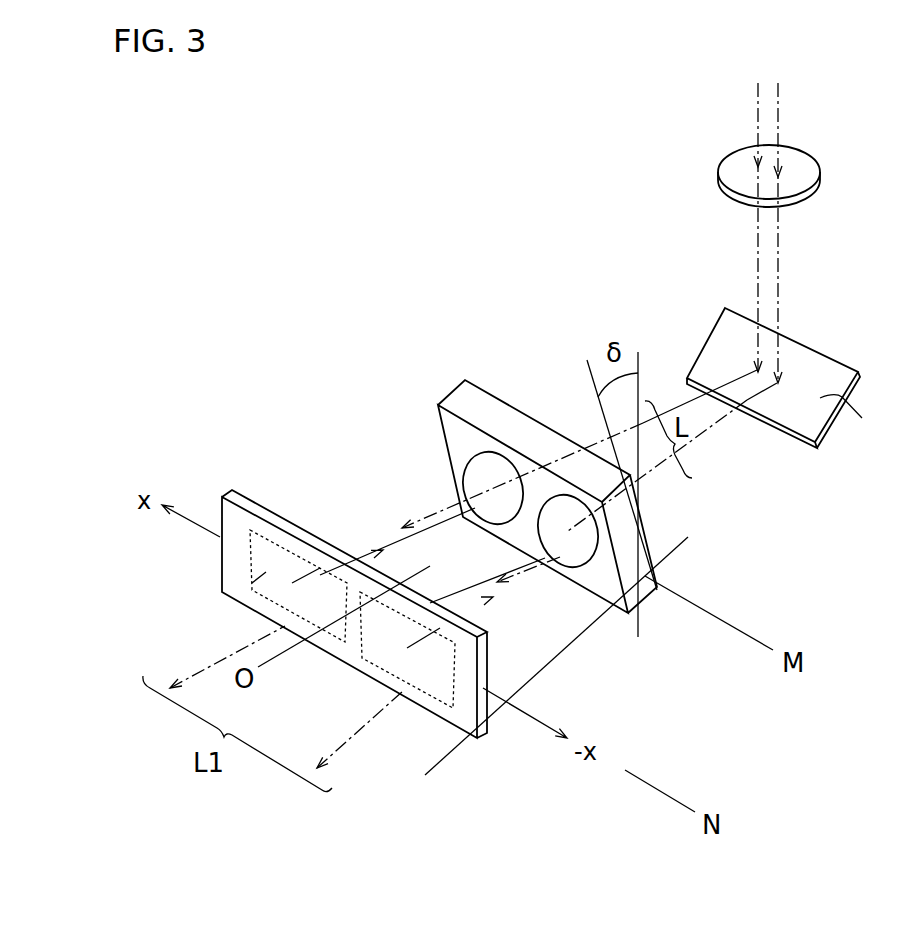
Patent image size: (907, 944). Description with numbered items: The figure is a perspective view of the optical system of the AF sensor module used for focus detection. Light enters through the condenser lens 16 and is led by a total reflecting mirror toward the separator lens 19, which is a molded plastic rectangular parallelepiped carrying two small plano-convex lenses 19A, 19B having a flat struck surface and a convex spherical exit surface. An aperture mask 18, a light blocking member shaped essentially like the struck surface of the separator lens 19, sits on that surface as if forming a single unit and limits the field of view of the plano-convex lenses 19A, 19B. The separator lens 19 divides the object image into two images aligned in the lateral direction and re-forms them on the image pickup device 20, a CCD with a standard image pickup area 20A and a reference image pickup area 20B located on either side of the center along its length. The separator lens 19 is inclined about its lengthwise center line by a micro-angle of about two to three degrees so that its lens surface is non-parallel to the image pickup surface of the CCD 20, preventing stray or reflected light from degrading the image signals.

The condenser lens 16 is at (802, 167).
The aperture mask 18 is at (510, 405).
The separator lens 19 is at (495, 510).
The plano-convex lens 19A is at (468, 467).
The plano-convex lens 19B is at (580, 557).
The image pickup device 20 is at (295, 630).
The image pickup area 20A is at (252, 585).
The image pickup area 20B is at (432, 700).